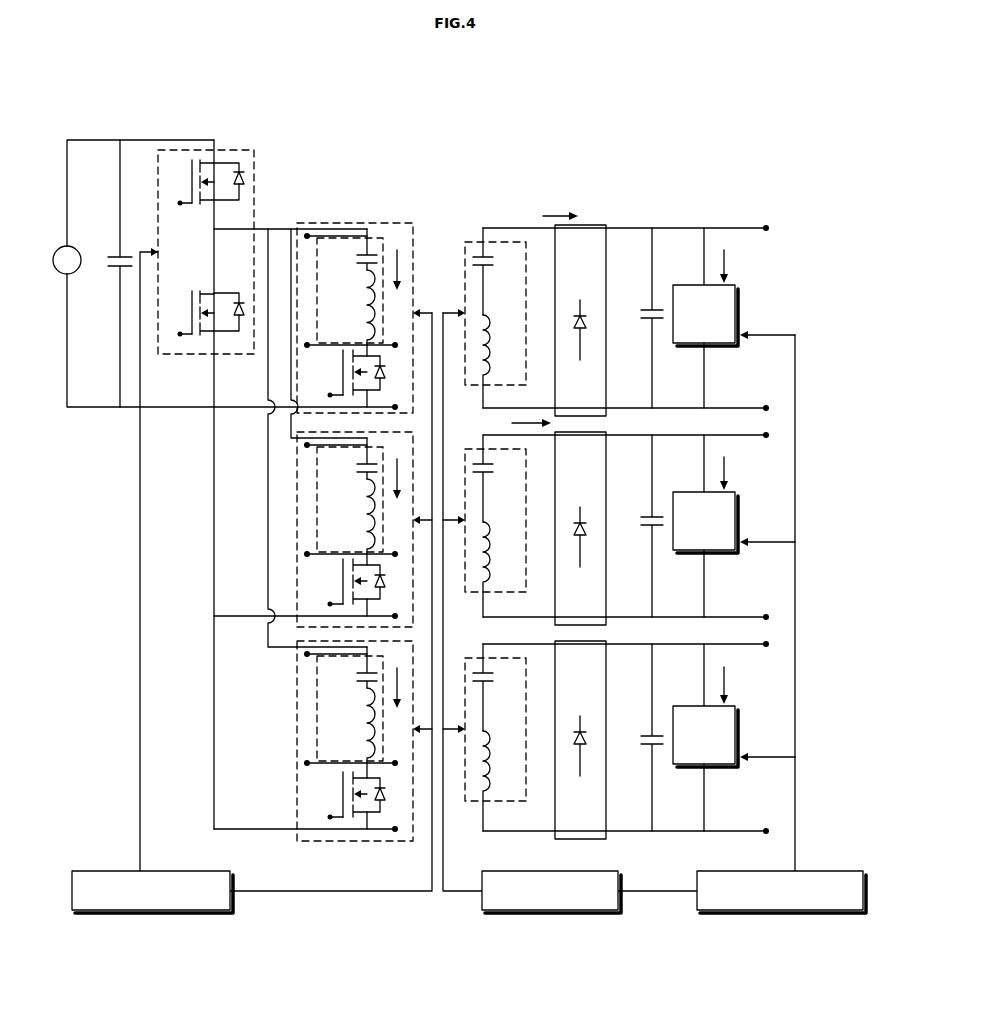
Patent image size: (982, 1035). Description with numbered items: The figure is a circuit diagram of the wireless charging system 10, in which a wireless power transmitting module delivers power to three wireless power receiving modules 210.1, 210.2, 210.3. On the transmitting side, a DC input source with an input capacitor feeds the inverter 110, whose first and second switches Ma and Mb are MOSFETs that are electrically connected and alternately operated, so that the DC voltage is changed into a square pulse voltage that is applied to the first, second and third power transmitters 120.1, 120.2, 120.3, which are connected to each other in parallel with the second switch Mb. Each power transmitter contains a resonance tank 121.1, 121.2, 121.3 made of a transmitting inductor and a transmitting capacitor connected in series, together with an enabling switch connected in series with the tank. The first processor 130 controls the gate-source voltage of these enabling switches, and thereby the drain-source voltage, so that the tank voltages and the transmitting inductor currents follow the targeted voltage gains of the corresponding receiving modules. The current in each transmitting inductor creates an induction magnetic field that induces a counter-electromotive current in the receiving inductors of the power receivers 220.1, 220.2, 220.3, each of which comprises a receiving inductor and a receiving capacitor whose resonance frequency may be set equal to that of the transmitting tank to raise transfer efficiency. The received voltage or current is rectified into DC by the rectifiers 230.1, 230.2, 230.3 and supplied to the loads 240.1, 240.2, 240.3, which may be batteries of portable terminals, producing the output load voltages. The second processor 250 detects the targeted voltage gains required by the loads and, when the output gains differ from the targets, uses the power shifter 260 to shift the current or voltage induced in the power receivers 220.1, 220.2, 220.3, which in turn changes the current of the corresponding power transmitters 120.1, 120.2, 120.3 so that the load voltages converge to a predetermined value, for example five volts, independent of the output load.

The wireless charging system 10 is at (733, 136).
The inverter 110 is at (212, 150).
The first power transmitter 120.1 is at (307, 222).
The second power transmitter 120.2 is at (297, 518).
The third power transmitter 120.3 is at (297, 725).
The first resonance tank 121.1 is at (370, 238).
The second resonance tank 121.2 is at (317, 478).
The third resonance tank 121.3 is at (317, 687).
The first processor 130 is at (148, 912).
The first wireless power receiving module 210.1 is at (688, 229).
The second wireless power receiving module 210.2 is at (688, 435).
The third wireless power receiving module 210.3 is at (688, 644).
The first power receiver 220.1 is at (488, 242).
The second power receiver 220.2 is at (557, 437).
The third power receiver 220.3 is at (472, 806).
The first rectifier 230.1 is at (585, 225).
The second rectifier 230.2 is at (606, 585).
The third rectifier 230.3 is at (606, 806).
The first load 240.1 is at (738, 300).
The second load 240.2 is at (738, 508).
The third load 240.3 is at (738, 720).
The second processor 250 is at (780, 913).
The power shifter 260 is at (552, 913).